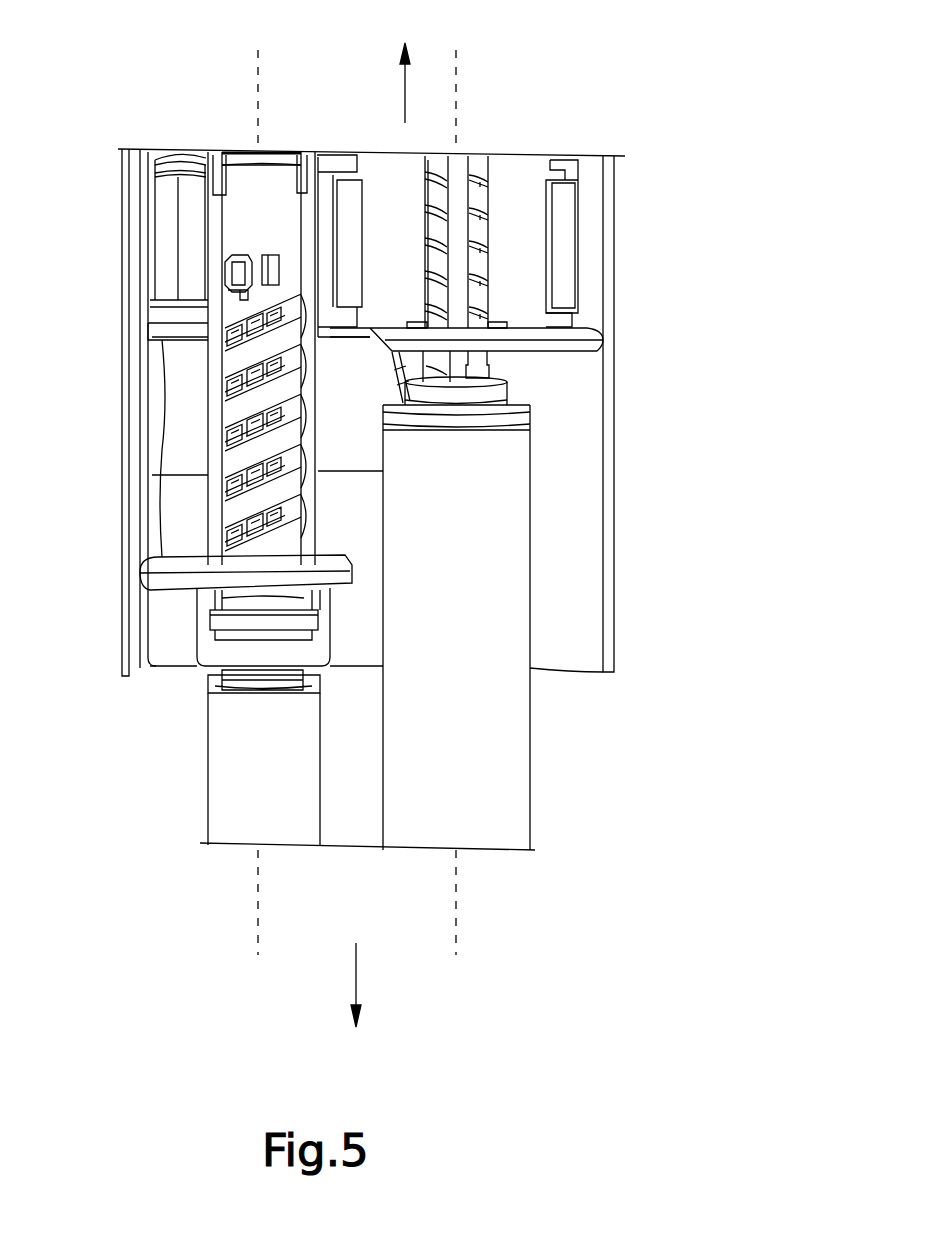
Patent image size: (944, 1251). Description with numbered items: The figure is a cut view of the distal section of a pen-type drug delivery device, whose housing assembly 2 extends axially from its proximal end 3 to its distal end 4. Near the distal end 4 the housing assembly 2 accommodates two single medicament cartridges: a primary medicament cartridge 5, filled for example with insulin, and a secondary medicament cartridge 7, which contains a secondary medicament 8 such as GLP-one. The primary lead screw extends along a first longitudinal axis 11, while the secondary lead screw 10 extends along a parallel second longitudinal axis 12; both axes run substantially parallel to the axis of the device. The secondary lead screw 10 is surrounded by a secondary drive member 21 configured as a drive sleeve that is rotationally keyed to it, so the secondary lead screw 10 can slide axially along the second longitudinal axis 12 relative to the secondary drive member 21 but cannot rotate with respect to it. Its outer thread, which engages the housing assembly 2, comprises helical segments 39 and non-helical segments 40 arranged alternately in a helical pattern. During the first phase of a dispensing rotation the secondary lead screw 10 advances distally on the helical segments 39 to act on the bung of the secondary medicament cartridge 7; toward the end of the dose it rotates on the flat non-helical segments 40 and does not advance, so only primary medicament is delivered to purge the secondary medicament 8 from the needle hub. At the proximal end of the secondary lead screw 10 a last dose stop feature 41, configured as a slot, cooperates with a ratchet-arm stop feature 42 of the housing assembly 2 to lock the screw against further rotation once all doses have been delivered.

The drug delivery device housing assembly 2 is at (135, 645).
The proximal end 3 is at (385, 29).
The distal end 4 is at (375, 1082).
The primary medicament cartridge 5 is at (513, 748).
The secondary medicament cartridge 7 is at (220, 813).
The secondary medicament 8 is at (338, 784).
The secondary lead screw 10 is at (194, 328).
The first longitudinal axis 11 is at (458, 82).
The second longitudinal axis 12 is at (258, 78).
The secondary drive member 21 is at (195, 250).
The helical segments 39 is at (232, 390).
The non-helical segments 40 is at (265, 362).
The last dose stop feature 41 is at (268, 253).
The stop feature 42 is at (252, 600).